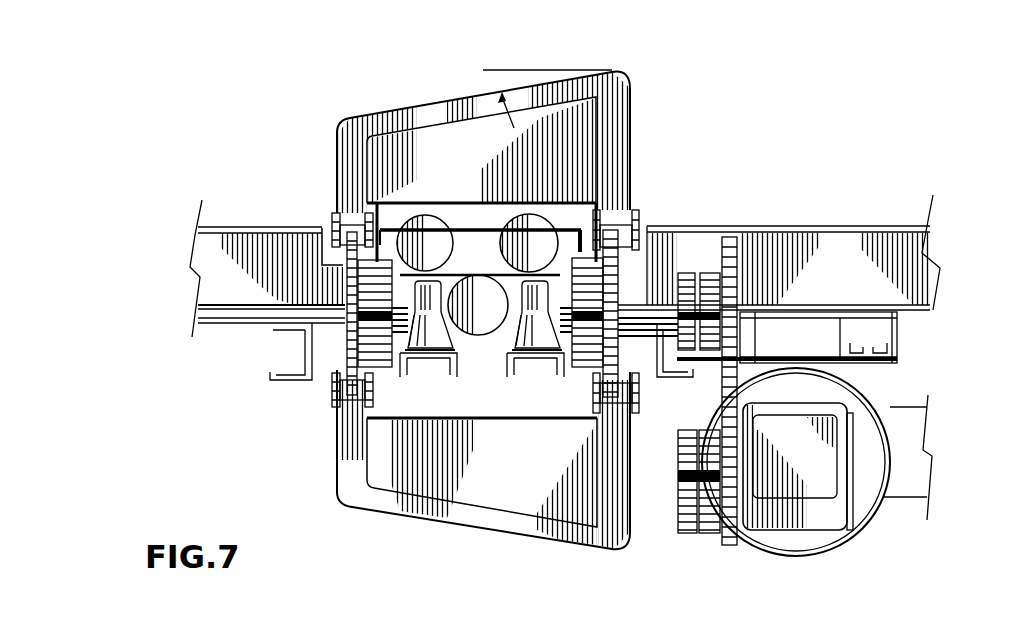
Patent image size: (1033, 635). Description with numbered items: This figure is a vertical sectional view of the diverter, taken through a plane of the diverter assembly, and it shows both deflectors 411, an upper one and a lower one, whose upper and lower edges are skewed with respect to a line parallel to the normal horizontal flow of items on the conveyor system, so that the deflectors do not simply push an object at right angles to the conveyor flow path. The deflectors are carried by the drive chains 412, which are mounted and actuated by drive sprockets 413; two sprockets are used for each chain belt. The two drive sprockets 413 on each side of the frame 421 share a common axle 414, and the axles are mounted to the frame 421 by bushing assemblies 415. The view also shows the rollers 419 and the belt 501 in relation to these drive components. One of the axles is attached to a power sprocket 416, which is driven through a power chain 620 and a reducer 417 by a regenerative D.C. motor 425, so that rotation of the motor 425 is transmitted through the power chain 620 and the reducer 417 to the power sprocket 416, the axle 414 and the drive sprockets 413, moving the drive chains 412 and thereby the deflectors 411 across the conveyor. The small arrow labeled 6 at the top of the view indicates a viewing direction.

The deflector 411 is at (467, 100).
The drive chain 412 is at (343, 357).
The drive sprocket 413 is at (575, 253).
The axle 414 is at (621, 267).
The bushing assembly 415 is at (527, 333).
The power sprocket 416 is at (740, 273).
The reducer 417 is at (820, 430).
The roller 419 is at (433, 223).
The frame 421 is at (212, 232).
The regenerative D.C. motor 425 is at (837, 521).
The belt 501 is at (598, 230).
The power chain 620 is at (730, 377).
The viewing direction arrow 6 is at (505, 65).